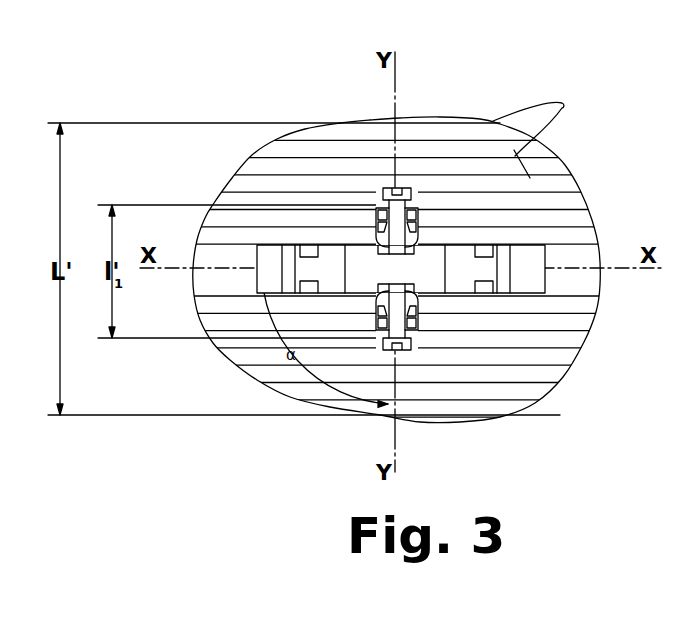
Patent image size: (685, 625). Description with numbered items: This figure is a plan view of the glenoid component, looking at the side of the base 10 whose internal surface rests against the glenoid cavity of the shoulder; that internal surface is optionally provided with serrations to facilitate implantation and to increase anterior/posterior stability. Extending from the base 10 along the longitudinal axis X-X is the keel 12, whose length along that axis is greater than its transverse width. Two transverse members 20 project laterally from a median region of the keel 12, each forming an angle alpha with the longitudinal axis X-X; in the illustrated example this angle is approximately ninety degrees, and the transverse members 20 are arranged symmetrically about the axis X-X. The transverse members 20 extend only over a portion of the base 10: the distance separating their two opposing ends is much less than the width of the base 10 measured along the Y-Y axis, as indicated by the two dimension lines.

The base 10 is at (563, 160).
The keel 12 is at (470, 242).
The transverse members 20 is at (378, 214).